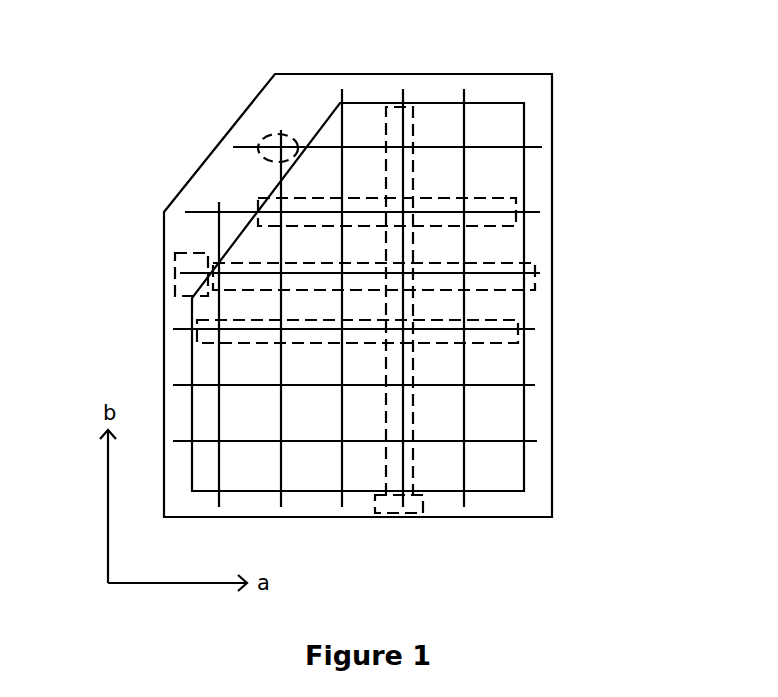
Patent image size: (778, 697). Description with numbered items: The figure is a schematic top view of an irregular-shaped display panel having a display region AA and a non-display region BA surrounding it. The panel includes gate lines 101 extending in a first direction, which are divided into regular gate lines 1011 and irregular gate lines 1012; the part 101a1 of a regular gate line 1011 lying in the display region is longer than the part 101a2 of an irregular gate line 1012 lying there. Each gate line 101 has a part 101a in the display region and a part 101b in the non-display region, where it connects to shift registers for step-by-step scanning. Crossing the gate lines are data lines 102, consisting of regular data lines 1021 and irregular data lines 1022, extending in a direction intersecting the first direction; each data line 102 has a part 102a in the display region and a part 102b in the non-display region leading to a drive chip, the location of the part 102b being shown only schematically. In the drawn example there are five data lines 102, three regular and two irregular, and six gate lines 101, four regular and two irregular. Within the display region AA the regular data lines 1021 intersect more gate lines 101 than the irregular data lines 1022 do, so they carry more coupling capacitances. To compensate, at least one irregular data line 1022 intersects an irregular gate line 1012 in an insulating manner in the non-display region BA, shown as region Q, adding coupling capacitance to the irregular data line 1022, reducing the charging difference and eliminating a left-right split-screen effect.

The non-display region BA is at (535, 103).
The display region AA is at (495, 186).
The gate lines 101 is at (356, 298).
The regular gate line 1011 is at (483, 443).
The irregular gate line 1012 is at (358, 147).
The data lines 102 is at (311, 298).
The regular data line 1021 is at (465, 363).
The irregular data line 1022 is at (282, 397).
The part of the data line in the display region 102a is at (413, 140).
The part of the data line in the non-display region 102b is at (388, 513).
The part of the gate line in the display region 101a is at (535, 263).
The part of the regular gate line in the display region 101a1 is at (518, 340).
The part of the irregular gate line in the display region 101a2 is at (517, 224).
The part of the gate line in the non-display region 101b is at (175, 255).
The region Q is at (265, 138).